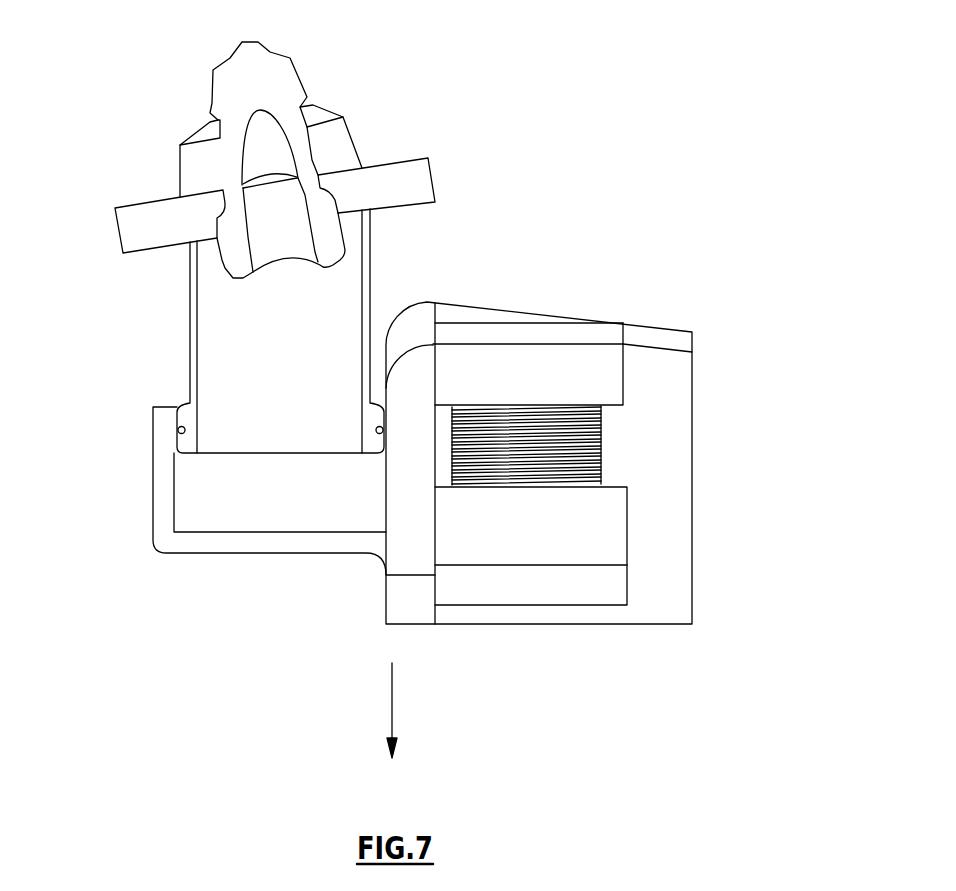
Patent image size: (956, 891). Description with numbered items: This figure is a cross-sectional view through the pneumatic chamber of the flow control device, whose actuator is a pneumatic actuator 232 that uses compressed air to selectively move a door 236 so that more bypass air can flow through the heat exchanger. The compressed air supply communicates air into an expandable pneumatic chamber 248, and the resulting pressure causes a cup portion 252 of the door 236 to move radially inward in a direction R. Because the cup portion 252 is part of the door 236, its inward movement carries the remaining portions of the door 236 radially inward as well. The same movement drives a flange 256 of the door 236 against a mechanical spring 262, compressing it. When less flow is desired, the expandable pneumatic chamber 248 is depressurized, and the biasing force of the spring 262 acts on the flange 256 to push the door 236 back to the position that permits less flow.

The pneumatic actuator 232 is at (193, 350).
The door 236 is at (420, 318).
The expandable pneumatic chamber 248 is at (278, 477).
The cup portion 252 is at (166, 542).
The flange 256 is at (568, 337).
The mechanical spring 262 is at (605, 452).
The direction R is at (392, 712).